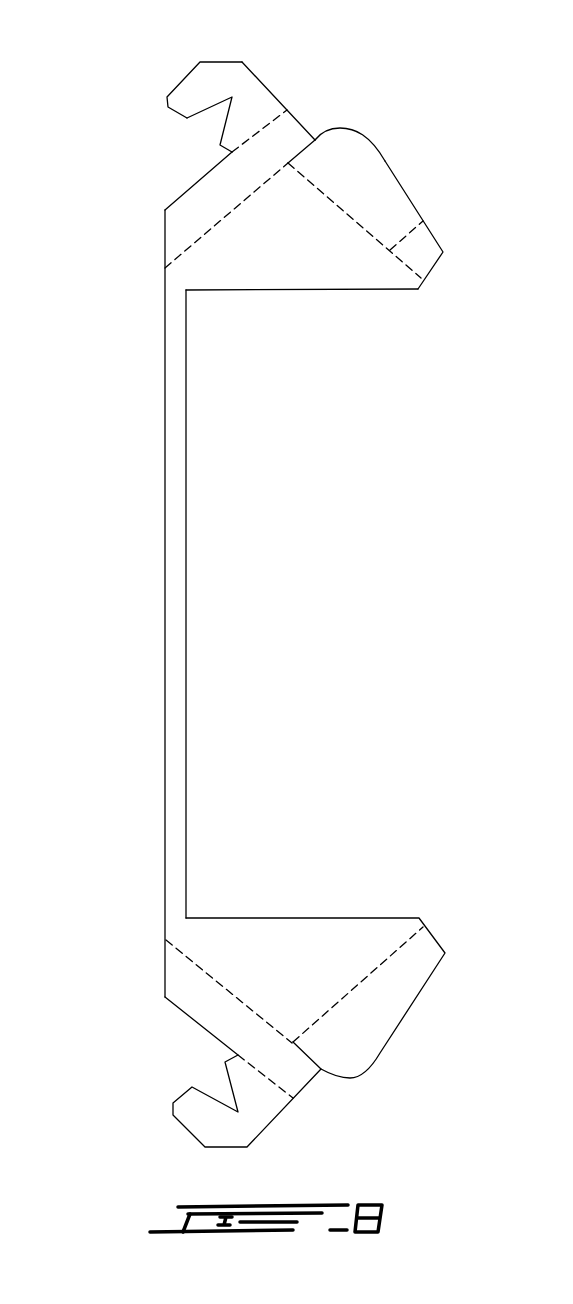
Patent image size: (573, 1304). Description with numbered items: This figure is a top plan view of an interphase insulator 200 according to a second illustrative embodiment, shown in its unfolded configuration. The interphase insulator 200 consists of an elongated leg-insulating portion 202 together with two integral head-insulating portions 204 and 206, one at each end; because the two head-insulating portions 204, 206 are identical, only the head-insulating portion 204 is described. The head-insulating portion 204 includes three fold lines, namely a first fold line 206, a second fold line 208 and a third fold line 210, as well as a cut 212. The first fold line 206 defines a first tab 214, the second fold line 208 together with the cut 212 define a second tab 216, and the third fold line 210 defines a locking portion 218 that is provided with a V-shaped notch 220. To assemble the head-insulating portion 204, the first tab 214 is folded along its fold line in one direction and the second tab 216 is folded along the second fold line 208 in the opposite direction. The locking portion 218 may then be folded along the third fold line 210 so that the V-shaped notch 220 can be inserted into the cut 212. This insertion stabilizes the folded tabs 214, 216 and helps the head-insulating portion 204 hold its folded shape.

The interphase insulator 200 is at (120, 593).
The leg-insulating portion 202 is at (180, 650).
The head-insulating portion 204 is at (268, 292).
The first fold line 206 is at (423, 218).
The second fold line 208 is at (193, 240).
The third fold line 210 is at (259, 131).
The cut 212 is at (302, 152).
The first tab 214 is at (352, 175).
The second tab 216 is at (213, 190).
The locking portion 218 is at (203, 88).
The V-shaped notch 220 is at (217, 105).